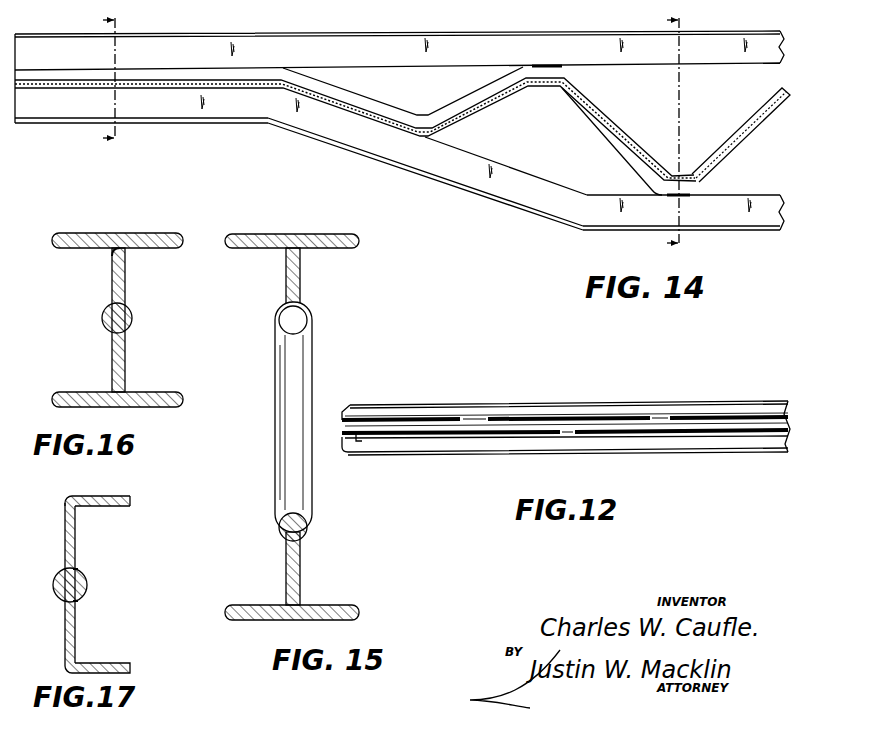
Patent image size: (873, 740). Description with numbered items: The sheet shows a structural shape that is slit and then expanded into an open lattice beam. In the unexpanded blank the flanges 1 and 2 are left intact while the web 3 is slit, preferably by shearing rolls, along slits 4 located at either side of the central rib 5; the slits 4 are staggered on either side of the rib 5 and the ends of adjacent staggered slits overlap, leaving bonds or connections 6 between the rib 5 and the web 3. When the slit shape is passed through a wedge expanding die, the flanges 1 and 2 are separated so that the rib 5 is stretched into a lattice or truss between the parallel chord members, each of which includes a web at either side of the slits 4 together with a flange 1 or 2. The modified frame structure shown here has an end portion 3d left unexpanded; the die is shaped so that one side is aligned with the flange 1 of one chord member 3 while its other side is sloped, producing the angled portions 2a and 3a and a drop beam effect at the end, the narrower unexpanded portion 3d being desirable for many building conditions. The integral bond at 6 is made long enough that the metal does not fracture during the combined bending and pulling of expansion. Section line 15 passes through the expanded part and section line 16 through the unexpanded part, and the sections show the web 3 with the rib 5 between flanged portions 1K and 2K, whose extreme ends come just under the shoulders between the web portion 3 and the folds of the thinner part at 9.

In FIG. 14, the flange 1 is at (769, 35).
In FIG. 17, the flange 1 is at (102, 509).
In FIG. 12, the flange 1 is at (559, 406).
In FIG. 16, the flanged portion 1K is at (90, 234).
In FIG. 15, the flanged portion 1K is at (275, 234).
In FIG. 14, the flange 2 is at (607, 231).
In FIG. 17, the flange 2 is at (113, 664).
In FIG. 12, the flange 2 is at (483, 450).
In FIG. 16, the flanged portion 2K is at (81, 393).
In FIG. 15, the flanged portion 2K is at (275, 606).
In FIG. 14, the sloped flange portion 2a is at (465, 192).
In FIG. 14, the web 3 is at (333, 42).
In FIG. 16, the web 3 is at (126, 281).
In FIG. 17, the web 3 is at (76, 543).
In FIG. 15, the web 3 is at (300, 293).
In FIG. 12, the web 3 is at (447, 440).
In FIG. 14, the sloped web portion 3a is at (393, 152).
In FIG. 14, the unexpanded portion 3d is at (153, 116).
In FIG. 17, the slits 4 is at (78, 572).
In FIG. 12, the slits 4 is at (384, 418).
In FIG. 14, the central rib 5 is at (46, 76).
In FIG. 16, the central rib 5 is at (102, 318).
In FIG. 17, the central rib 5 is at (82, 589).
In FIG. 15, the central rib 5 is at (294, 370).
In FIG. 12, the central rib 5 is at (473, 419).
In FIG. 14, the bond 6 is at (558, 66).
In FIG. 12, the bond 6 is at (669, 419).
In FIG. 16, the folds of the thinner part 9 is at (112, 252).
In FIG. 14, the section line 15- 15 is at (662, 132).
In FIG. 14, the section line 16- 16 is at (98, 81).